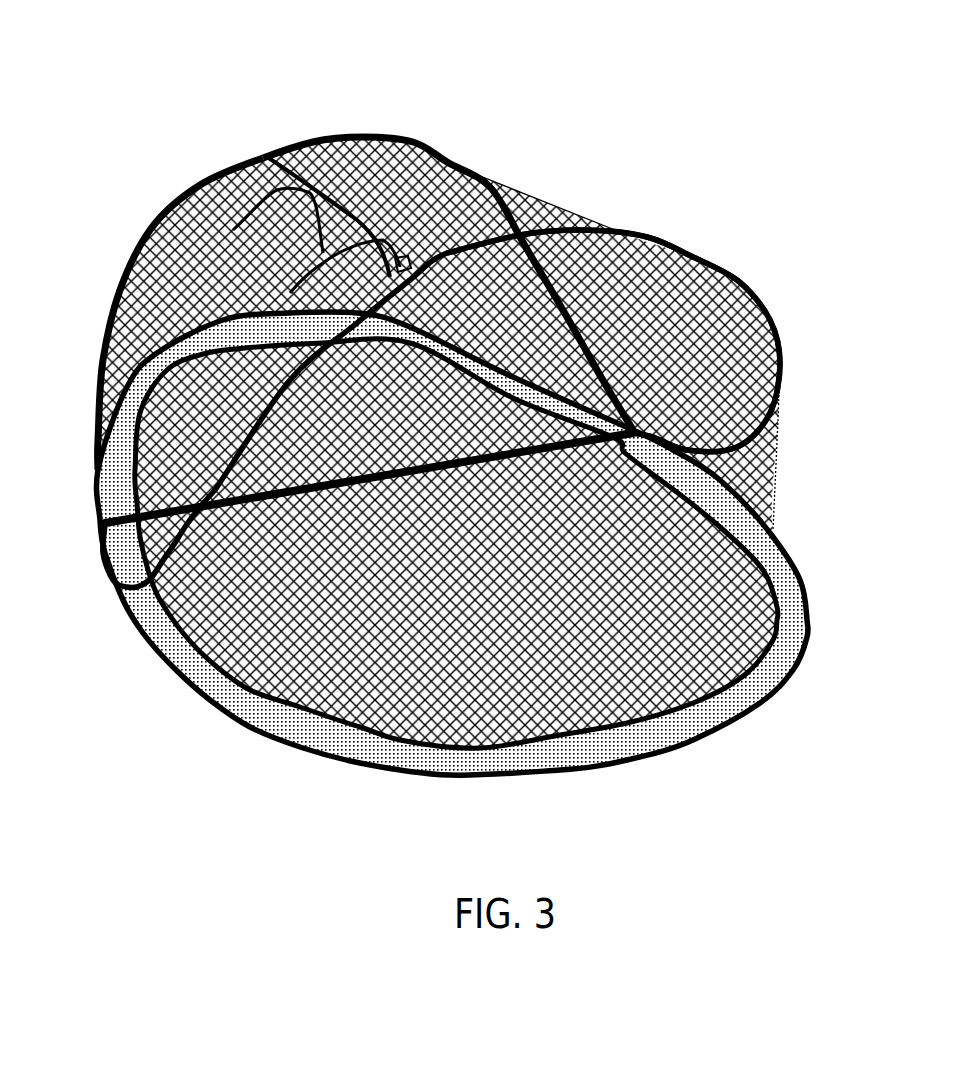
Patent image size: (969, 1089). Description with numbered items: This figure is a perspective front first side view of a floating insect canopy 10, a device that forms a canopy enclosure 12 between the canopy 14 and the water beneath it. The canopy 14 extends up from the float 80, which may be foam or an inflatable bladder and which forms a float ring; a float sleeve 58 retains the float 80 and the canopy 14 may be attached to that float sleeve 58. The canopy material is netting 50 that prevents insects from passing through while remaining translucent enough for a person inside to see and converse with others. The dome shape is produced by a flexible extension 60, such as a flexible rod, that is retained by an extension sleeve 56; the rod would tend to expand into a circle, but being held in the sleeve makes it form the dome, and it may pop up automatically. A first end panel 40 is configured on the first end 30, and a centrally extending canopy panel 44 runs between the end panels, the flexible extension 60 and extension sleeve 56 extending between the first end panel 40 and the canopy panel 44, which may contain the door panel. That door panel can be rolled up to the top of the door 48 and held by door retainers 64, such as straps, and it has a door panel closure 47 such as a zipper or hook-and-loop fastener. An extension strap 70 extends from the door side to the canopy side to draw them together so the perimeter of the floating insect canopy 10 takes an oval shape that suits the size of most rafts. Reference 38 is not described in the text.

The floating insect canopy 10 is at (196, 135).
The canopy enclosure 12 is at (733, 337).
The canopy 14 is at (315, 155).
The first end 30 is at (703, 720).
The mesh covering 38 is at (467, 200).
The first end panel 40 is at (712, 620).
The canopy panel 44 is at (532, 222).
The door panel closure 47 is at (407, 257).
The door 48 is at (357, 222).
The netting 50 is at (757, 393).
The extension sleeve 56 is at (740, 287).
The float sleeve 58 is at (217, 688).
The flexible extension 60 is at (637, 233).
The door retainer 64 is at (267, 152).
The extension strap 70 is at (118, 528).
The float 80 is at (172, 638).